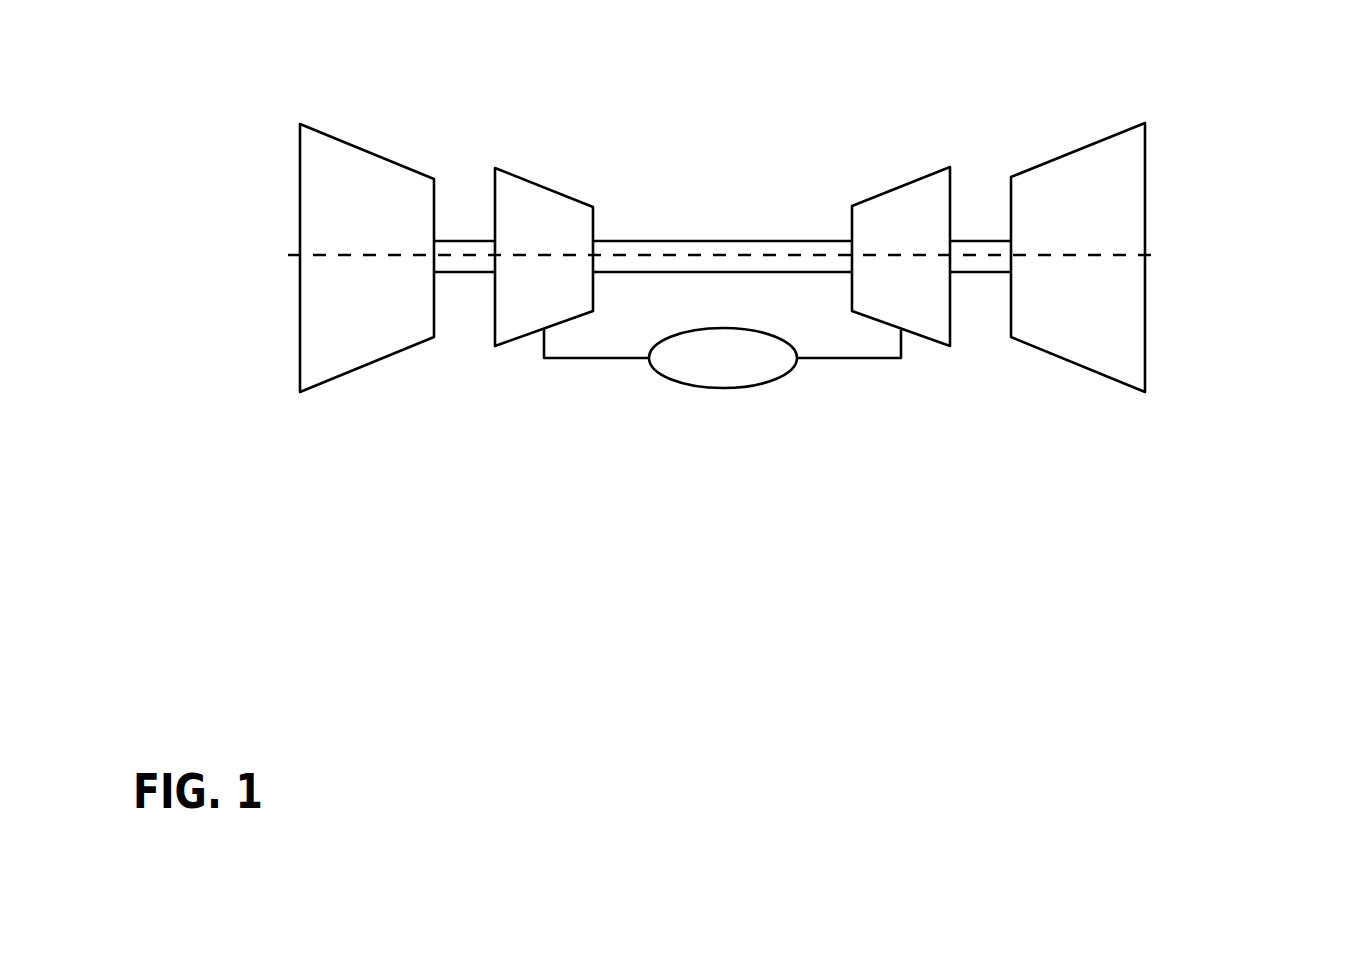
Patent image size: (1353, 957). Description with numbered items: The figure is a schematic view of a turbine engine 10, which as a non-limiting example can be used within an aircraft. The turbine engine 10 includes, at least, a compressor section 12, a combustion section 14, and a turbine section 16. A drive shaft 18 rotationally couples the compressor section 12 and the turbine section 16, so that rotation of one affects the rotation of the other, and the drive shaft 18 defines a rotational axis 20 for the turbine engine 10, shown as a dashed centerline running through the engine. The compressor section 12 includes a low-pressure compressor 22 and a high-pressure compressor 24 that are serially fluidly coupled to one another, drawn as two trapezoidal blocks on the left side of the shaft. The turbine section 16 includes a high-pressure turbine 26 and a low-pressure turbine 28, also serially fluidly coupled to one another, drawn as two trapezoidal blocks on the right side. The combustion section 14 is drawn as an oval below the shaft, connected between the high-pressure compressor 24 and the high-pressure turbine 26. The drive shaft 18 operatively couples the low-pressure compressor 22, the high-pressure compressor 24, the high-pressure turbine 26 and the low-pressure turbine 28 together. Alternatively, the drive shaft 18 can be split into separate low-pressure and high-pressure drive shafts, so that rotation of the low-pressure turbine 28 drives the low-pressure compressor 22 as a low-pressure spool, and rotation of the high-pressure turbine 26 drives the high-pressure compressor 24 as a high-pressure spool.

The turbine engine 10 is at (1332, 133).
The compressor section 12 is at (456, 202).
The combustion section 14 is at (682, 385).
The turbine section 16 is at (992, 202).
The drive shaft 18 is at (723, 240).
The rotational axis 20 is at (1156, 248).
The low-pressure compressor 22 is at (402, 165).
The high-pressure compressor 24 is at (558, 192).
The high-pressure turbine 26 is at (902, 182).
The low-pressure turbine 28 is at (1055, 155).